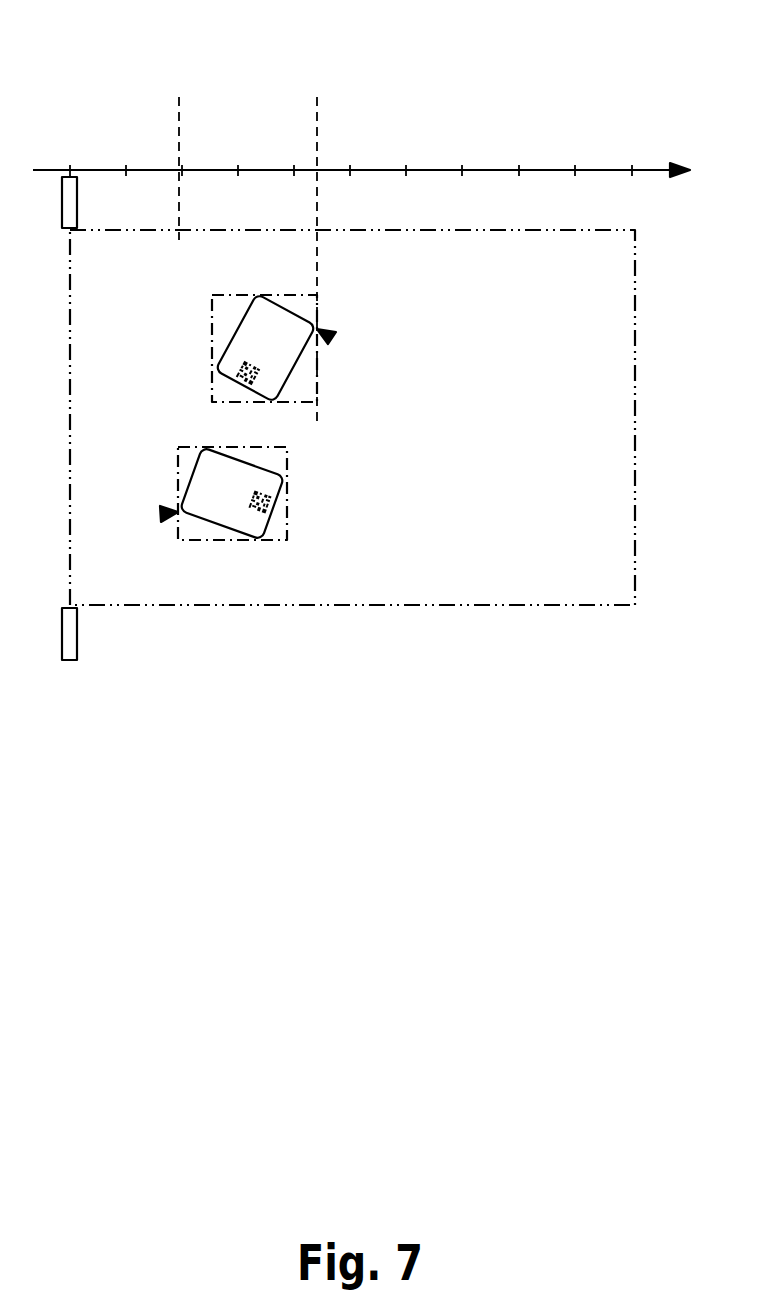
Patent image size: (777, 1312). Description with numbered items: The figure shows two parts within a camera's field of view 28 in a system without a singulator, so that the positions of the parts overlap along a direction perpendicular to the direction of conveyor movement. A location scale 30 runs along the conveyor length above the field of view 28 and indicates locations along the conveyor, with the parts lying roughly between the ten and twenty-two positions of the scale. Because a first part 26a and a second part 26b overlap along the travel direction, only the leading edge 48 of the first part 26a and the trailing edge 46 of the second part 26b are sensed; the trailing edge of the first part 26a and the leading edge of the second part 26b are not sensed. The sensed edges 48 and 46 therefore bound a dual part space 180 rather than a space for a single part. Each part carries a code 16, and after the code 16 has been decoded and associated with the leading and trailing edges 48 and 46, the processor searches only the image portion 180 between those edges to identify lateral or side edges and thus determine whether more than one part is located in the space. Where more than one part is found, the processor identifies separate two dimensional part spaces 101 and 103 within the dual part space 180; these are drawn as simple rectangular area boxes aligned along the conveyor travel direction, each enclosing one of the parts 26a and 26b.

The code 16 is at (250, 380).
The first part 26a is at (223, 365).
The second part 26b is at (232, 523).
The camera's field of view 28 is at (592, 360).
The location scale 30 is at (493, 170).
The trailing edge 46 is at (162, 515).
The leading edge 48 is at (333, 335).
The two dimensional part space 101 is at (285, 403).
The two dimensional part space 103 is at (288, 505).
The dual part space 180 is at (317, 97).